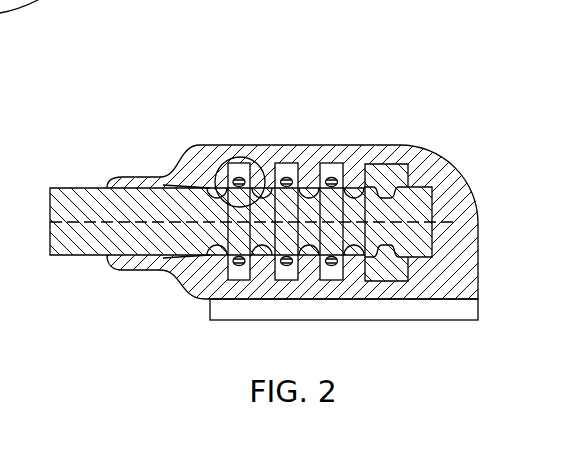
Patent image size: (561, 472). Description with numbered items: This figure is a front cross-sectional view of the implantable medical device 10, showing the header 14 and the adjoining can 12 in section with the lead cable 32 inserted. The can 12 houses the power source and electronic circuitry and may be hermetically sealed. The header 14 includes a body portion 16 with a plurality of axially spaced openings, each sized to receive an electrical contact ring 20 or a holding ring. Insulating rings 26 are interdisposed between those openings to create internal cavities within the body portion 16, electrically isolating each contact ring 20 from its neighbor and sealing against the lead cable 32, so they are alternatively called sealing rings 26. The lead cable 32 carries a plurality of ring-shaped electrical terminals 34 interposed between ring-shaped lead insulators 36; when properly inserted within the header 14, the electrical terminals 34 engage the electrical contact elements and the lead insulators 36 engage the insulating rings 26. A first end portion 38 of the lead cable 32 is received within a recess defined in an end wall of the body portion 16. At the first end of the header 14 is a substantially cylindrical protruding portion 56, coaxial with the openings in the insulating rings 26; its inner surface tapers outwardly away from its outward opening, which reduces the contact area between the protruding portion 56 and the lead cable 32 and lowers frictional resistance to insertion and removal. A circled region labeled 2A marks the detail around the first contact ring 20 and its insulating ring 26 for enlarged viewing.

The implantable medical device 10 is at (430, 81).
The detail region 2A is at (240, 157).
The can 12 is at (217, 313).
The header 14 is at (460, 278).
The body portion 16 is at (460, 197).
The electrical contact ring 20 is at (240, 275).
The insulating ring 26 is at (352, 275).
The lead cable 32 is at (75, 245).
The electrical terminal 34 is at (246, 213).
The lead insulator 36 is at (353, 210).
The first end portion 38 is at (418, 200).
The protruding portion 56 is at (140, 176).